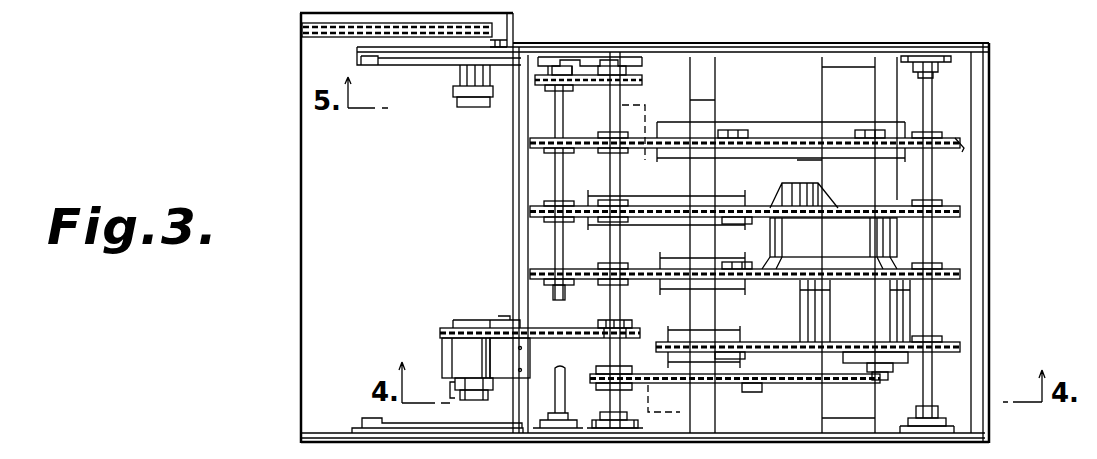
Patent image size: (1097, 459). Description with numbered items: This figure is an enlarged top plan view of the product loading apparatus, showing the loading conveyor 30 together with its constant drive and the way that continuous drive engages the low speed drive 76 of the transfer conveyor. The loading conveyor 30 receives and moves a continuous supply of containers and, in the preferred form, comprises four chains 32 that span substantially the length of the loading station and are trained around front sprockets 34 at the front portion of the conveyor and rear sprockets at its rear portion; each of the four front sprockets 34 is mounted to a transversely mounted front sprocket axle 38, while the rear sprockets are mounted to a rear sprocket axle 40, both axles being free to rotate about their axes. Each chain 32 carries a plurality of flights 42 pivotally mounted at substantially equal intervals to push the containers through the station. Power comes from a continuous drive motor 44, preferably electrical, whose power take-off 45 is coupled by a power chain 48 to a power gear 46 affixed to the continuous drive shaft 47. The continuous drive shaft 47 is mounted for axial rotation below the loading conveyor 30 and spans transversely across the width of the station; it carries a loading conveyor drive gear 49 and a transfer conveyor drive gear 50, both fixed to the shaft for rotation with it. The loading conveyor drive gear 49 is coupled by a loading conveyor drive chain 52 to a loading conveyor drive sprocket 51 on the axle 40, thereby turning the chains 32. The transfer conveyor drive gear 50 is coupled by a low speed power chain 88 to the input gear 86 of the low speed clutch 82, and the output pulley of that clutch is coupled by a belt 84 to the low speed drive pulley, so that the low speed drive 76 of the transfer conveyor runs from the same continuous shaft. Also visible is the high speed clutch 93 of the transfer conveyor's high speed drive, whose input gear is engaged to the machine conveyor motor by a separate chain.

The loading conveyor 30 is at (828, 30).
The high speed clutch 93 is at (461, 74).
The loading conveyor drive sprocket 51 is at (544, 70).
The loading conveyor drive gear 49 is at (630, 82).
The loading conveyor drive chain 52 is at (588, 90).
The continuous drive shaft 47 is at (620, 100).
The flights 42 is at (752, 131).
The chains 32 is at (773, 137).
The front sprocket axle 38 is at (929, 112).
The front sprockets 34 is at (957, 148).
The rear sprocket axle 40 is at (563, 184).
The continuous drive motor 44 is at (878, 314).
The power take-off 45 is at (895, 376).
The power gear 46 is at (655, 347).
The power chain 48 is at (763, 385).
The transfer conveyor drive gear 50 is at (633, 325).
The low speed power chain 88 is at (578, 328).
The input gear 86 is at (448, 326).
The low speed clutch 82 is at (468, 355).
The belt 84 is at (453, 390).
The low speed drive 76 is at (501, 410).